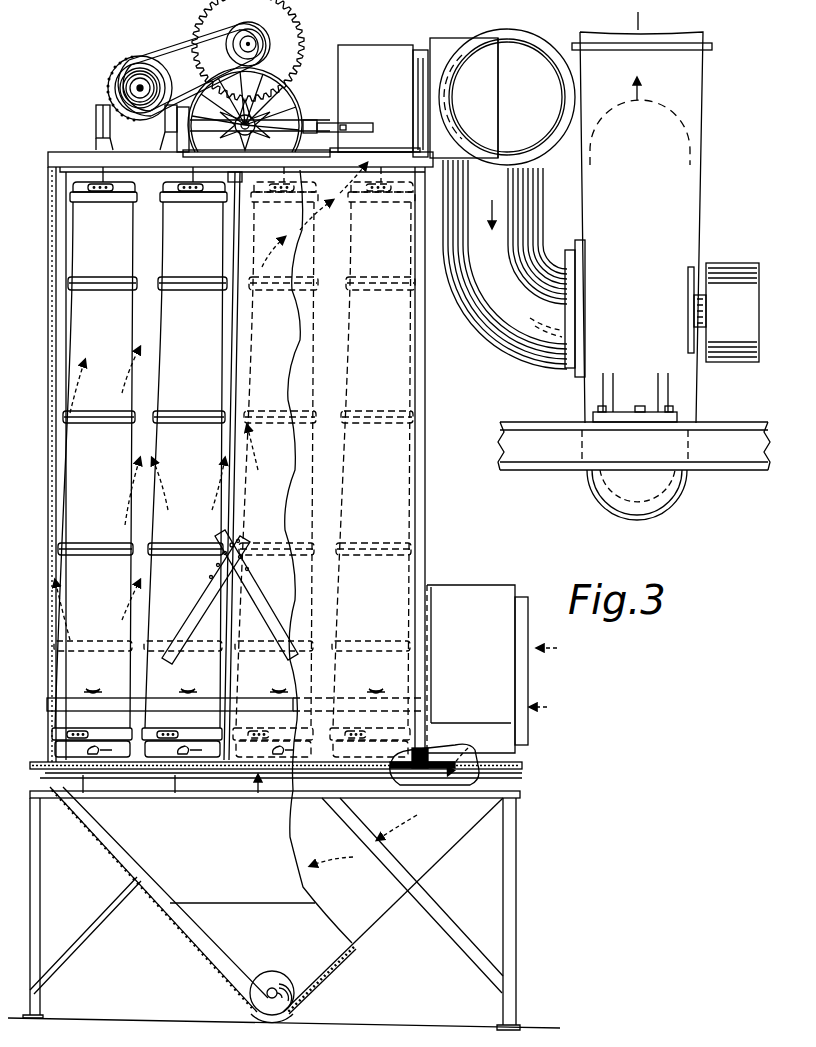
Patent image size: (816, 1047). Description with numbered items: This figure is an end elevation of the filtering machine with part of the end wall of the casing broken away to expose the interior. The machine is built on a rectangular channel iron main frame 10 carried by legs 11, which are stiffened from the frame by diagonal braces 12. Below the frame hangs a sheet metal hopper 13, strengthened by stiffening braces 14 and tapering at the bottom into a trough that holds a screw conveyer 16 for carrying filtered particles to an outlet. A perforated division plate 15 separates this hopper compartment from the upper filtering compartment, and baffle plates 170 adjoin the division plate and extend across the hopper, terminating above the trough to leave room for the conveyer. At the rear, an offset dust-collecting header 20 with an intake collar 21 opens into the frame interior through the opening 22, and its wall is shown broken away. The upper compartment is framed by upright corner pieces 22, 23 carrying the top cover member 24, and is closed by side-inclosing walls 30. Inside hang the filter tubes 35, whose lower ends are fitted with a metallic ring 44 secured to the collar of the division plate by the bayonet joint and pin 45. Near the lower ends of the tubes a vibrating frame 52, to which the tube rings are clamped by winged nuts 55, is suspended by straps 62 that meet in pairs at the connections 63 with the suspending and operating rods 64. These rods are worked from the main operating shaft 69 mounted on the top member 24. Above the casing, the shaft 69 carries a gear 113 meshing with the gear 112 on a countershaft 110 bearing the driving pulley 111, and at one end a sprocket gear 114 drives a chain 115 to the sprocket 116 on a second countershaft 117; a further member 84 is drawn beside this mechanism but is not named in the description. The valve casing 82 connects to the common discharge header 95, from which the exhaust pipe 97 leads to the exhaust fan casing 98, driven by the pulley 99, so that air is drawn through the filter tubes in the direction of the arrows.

The main frame 10 is at (40, 778).
The legs 11 is at (40, 888).
The diagonal braces 12 is at (90, 930).
The hopper 13 is at (345, 955).
The stiffening braces 14 is at (117, 845).
The division plate 15 is at (230, 762).
The screw conveyer 16 is at (267, 980).
The dust-collecting header 20 is at (455, 598).
The collar 21 is at (522, 673).
The opening 22 is at (425, 387).
The upright corner piece 23 is at (48, 283).
The top cover member 24 is at (66, 155).
The side-inclosing walls 30 is at (50, 362).
The filter tube 35 is at (78, 480).
The metallic ring 44 is at (115, 752).
The bayonet joint and pin 45 is at (95, 750).
The vibrating frame 52 is at (255, 700).
The winged nuts 55 is at (92, 692).
The straps 62 is at (207, 612).
The connection 63 is at (240, 553).
The suspending and operating rods 64 is at (235, 358).
The main operating shaft 69 is at (256, 43).
The valve casing 82 is at (376, 57).
The shaft 84 is at (330, 118).
The discharge header 95 is at (447, 45).
The exhaust pipe 97 is at (520, 345).
The exhaust fan casing 98 is at (680, 235).
The pulley 99 is at (738, 268).
The countershaft 110 is at (330, 143).
The driving pulley 111 is at (300, 93).
The gear 112 is at (185, 146).
The gear 113 is at (205, 12).
The sprocket gear 114 is at (203, 56).
The chain 115 is at (158, 36).
The sprocket 116 is at (112, 72).
The countershaft 117 is at (138, 88).
The baffle plates 170 is at (245, 882).